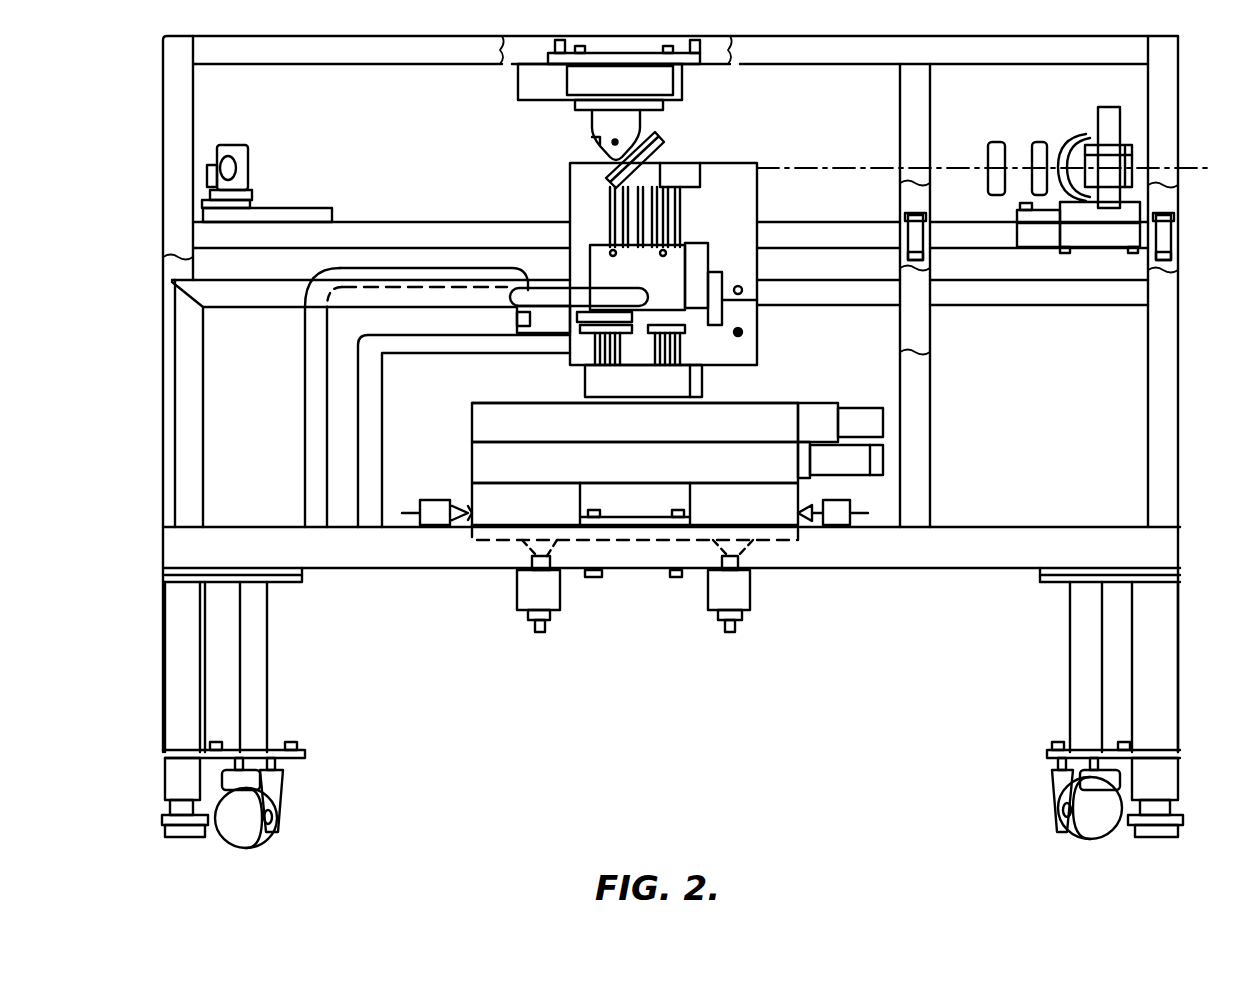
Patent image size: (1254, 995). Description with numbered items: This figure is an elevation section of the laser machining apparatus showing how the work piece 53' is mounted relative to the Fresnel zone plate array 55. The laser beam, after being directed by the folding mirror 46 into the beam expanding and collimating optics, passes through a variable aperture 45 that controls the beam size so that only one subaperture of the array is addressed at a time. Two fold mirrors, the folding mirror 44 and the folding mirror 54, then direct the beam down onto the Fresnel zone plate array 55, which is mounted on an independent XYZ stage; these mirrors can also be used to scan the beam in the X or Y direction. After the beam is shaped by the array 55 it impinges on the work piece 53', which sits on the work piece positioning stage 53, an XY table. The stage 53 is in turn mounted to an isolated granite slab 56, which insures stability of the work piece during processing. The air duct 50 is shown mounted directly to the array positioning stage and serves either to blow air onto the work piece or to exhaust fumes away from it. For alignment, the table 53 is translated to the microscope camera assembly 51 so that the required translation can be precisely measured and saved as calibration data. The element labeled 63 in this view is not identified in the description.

The folding mirror 44 is at (1140, 158).
The variable aperture 45 is at (993, 140).
The folding mirror 46 is at (1042, 140).
The air duct 50 is at (585, 390).
The microscope camera assembly 51 is at (722, 314).
The work piece positioning stage 53 is at (642, 464).
The work piece 53' is at (643, 388).
The folding mirror 54 is at (592, 124).
The Fresnel zone plate array 55 is at (700, 270).
The isolated granite slab 56 is at (495, 541).
The pin array 63 is at (668, 262).